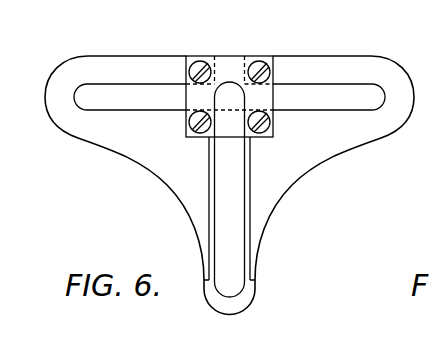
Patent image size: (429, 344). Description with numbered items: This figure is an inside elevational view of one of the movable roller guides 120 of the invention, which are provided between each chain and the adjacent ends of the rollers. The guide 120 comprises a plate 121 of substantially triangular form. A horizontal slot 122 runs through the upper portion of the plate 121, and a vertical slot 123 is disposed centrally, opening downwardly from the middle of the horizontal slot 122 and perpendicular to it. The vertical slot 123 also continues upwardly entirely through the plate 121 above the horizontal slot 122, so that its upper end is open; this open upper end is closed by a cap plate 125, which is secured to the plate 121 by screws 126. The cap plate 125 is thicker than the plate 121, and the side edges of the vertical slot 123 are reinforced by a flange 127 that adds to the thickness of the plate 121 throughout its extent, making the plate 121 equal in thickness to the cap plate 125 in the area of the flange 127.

The movable roller guide 120 is at (308, 66).
The plate 121 is at (358, 67).
The horizontal slot 122 is at (111, 87).
The vertical slot 123 is at (238, 200).
The cap plate 125 is at (229, 64).
The screws 126 is at (260, 66).
The flange 127 is at (209, 170).